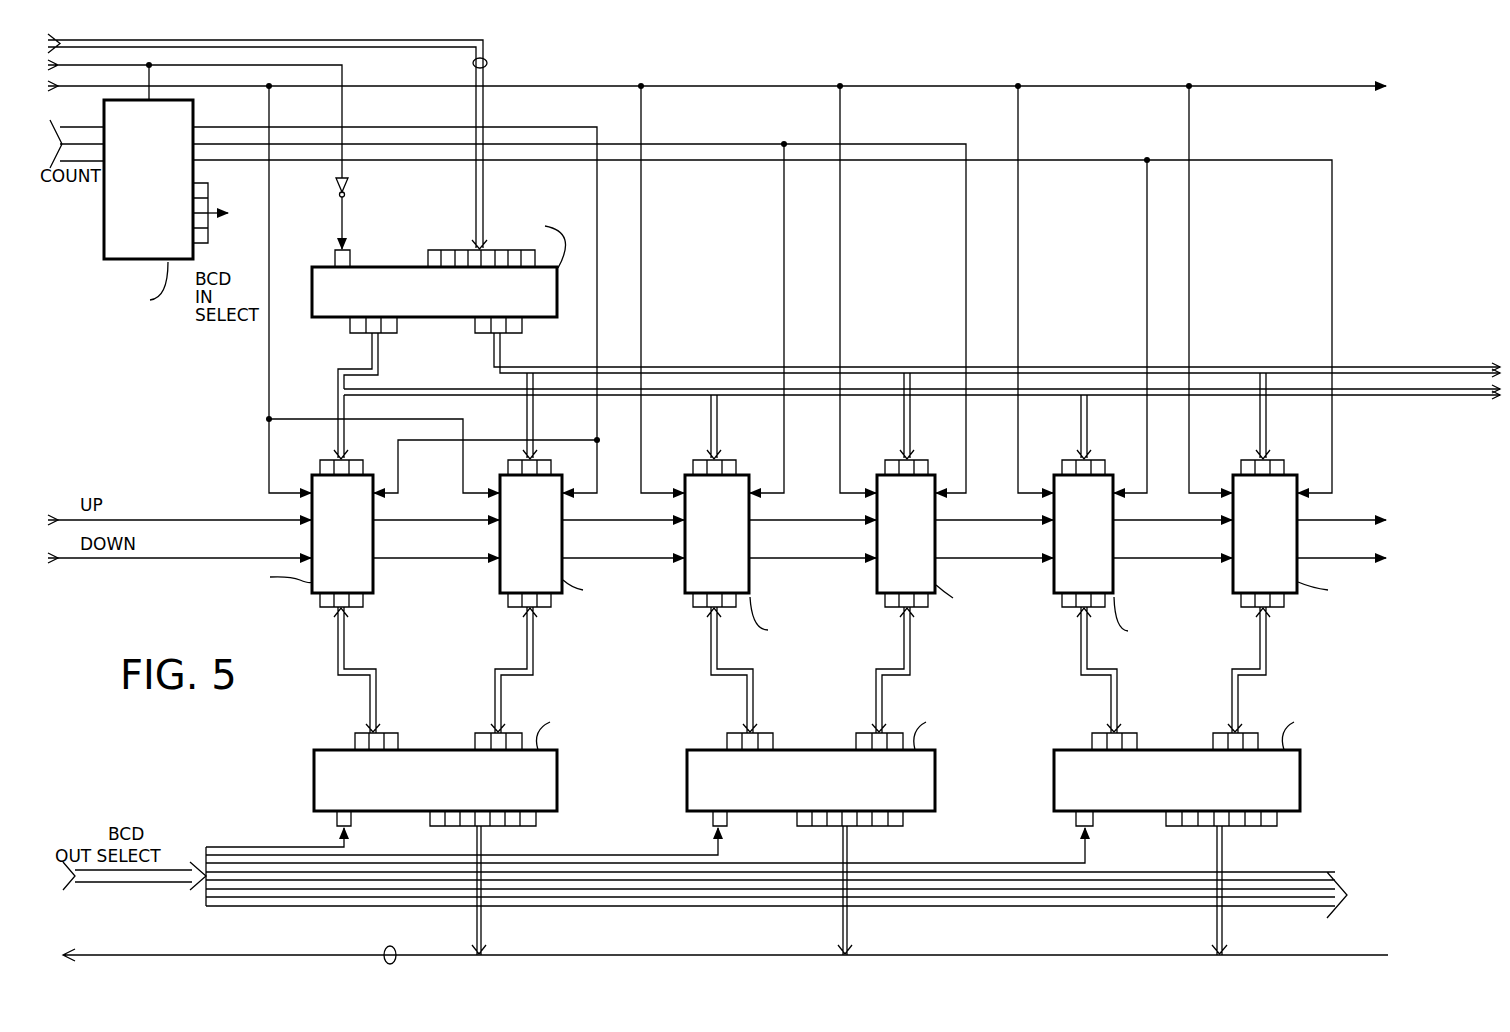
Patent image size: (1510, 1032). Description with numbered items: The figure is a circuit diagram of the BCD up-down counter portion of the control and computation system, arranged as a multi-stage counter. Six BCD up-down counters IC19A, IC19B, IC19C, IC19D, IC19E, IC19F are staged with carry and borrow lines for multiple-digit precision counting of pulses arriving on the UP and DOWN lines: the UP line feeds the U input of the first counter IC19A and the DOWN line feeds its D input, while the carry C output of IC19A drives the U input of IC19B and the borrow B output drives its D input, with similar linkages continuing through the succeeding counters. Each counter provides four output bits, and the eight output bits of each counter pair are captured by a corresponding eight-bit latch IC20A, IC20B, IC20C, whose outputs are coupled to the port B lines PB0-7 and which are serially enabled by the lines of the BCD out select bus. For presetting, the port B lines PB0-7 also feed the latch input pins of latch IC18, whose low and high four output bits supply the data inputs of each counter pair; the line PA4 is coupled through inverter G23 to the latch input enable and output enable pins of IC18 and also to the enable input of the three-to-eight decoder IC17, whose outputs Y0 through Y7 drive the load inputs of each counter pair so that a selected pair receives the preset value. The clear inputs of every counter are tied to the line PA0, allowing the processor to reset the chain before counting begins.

The 3-to-8 decoder IC17 is at (154, 251).
The latch IC18 is at (448, 296).
The BCD up-down counter IC19A is at (374, 577).
The BCD up-down counter IC19B is at (502, 593).
The BCD up-down counter IC19C is at (750, 573).
The BCD up-down counter IC19D is at (878, 593).
The BCD up-down counter IC19E is at (1114, 575).
The BCD up-down counter IC19F is at (1234, 593).
The 8-bit latch circuit IC20A is at (520, 796).
The 8-bit latch circuit IC20B is at (900, 796).
The 8-bit latch circuit IC20C is at (1270, 796).
The inverter G23 is at (350, 189).
The port A line PA4 is at (344, 66).
The port A line PA0 is at (778, 86).
The port B lines PB0-7 is at (487, 63).